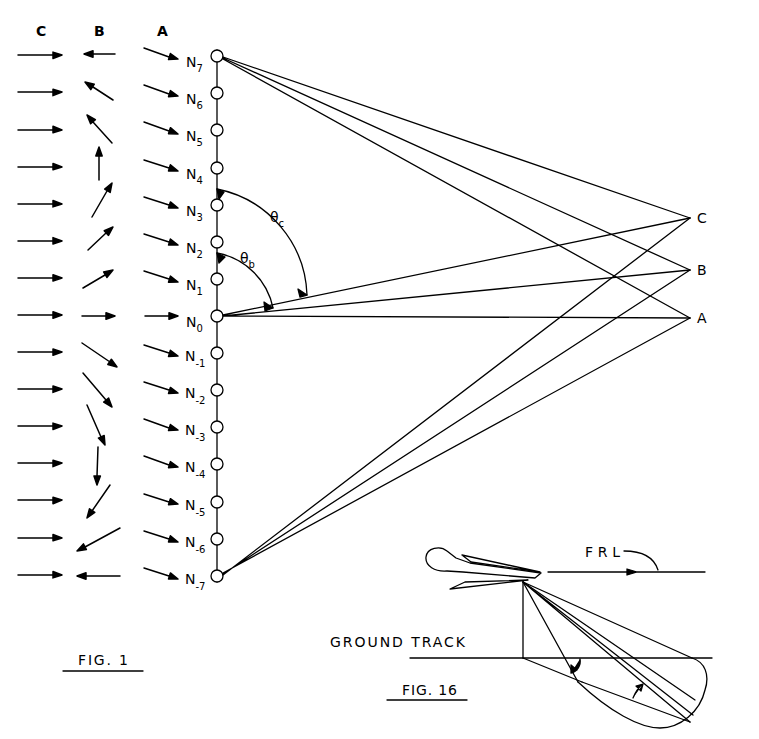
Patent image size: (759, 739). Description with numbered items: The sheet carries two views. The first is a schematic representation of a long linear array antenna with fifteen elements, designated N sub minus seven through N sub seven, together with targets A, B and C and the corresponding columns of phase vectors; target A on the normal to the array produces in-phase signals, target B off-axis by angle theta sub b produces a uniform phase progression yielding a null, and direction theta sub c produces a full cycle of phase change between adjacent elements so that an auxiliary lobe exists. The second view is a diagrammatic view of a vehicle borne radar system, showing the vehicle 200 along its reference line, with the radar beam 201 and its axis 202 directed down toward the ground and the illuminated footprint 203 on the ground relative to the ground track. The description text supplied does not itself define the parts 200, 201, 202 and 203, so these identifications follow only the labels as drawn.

The aircraft 200 is at (522, 568).
The radar beam 201 is at (607, 619).
The beam axis 202 is at (620, 647).
The beam footprint on ground 203 is at (705, 697).